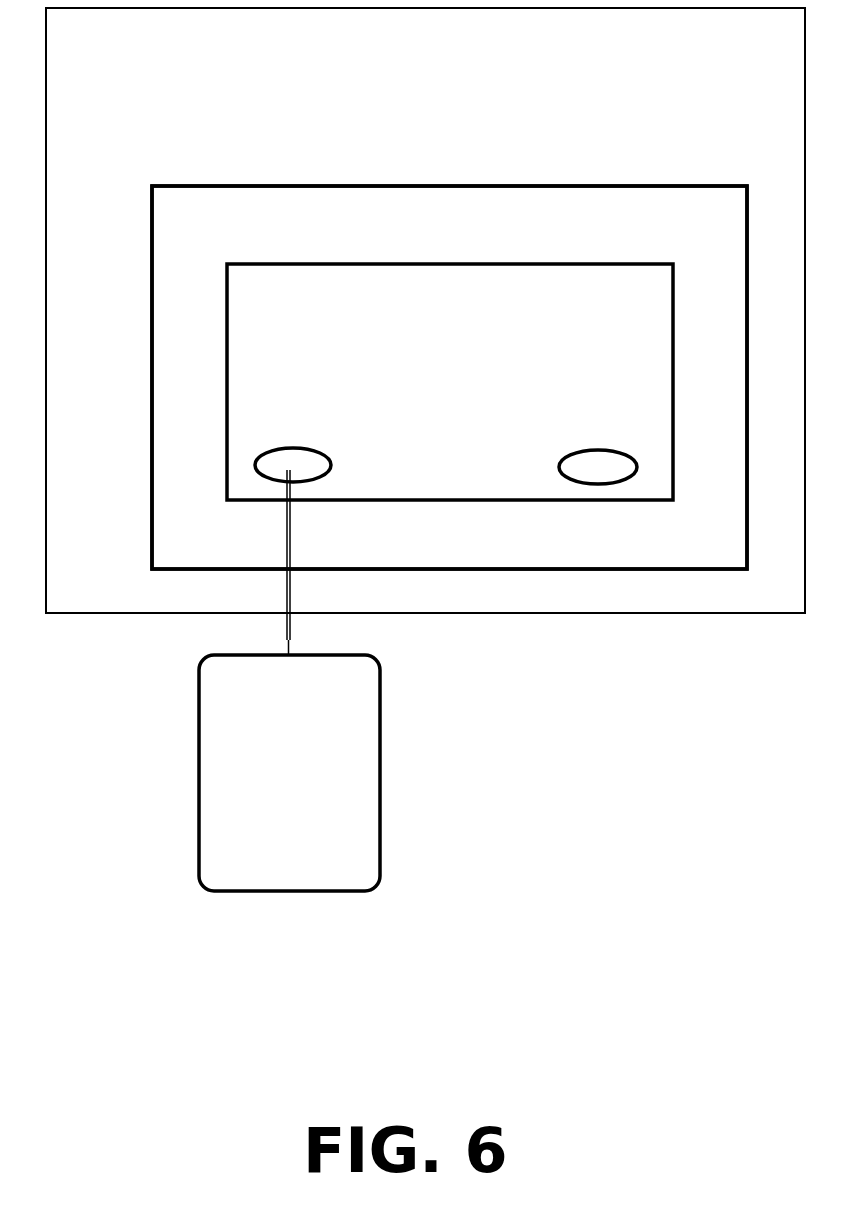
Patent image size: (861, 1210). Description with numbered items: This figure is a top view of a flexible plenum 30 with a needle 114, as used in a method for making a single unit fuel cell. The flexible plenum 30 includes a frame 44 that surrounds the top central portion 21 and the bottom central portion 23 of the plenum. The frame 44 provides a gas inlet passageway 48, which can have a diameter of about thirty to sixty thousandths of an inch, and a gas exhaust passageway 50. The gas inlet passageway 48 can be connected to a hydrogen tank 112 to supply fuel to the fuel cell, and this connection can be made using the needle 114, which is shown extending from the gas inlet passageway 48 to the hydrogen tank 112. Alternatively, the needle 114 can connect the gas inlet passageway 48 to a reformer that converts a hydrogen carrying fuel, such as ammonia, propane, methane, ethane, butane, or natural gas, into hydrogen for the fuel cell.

The flexible plenum 30 is at (487, 617).
The frame 44 is at (205, 186).
The bottom central portion 23 is at (620, 232).
The top central portion 21 is at (418, 320).
The gas inlet passageway 48 is at (278, 463).
The gas exhaust passageway 50 is at (598, 533).
The needle 114 is at (287, 625).
The hydrogen tank 112 is at (197, 773).